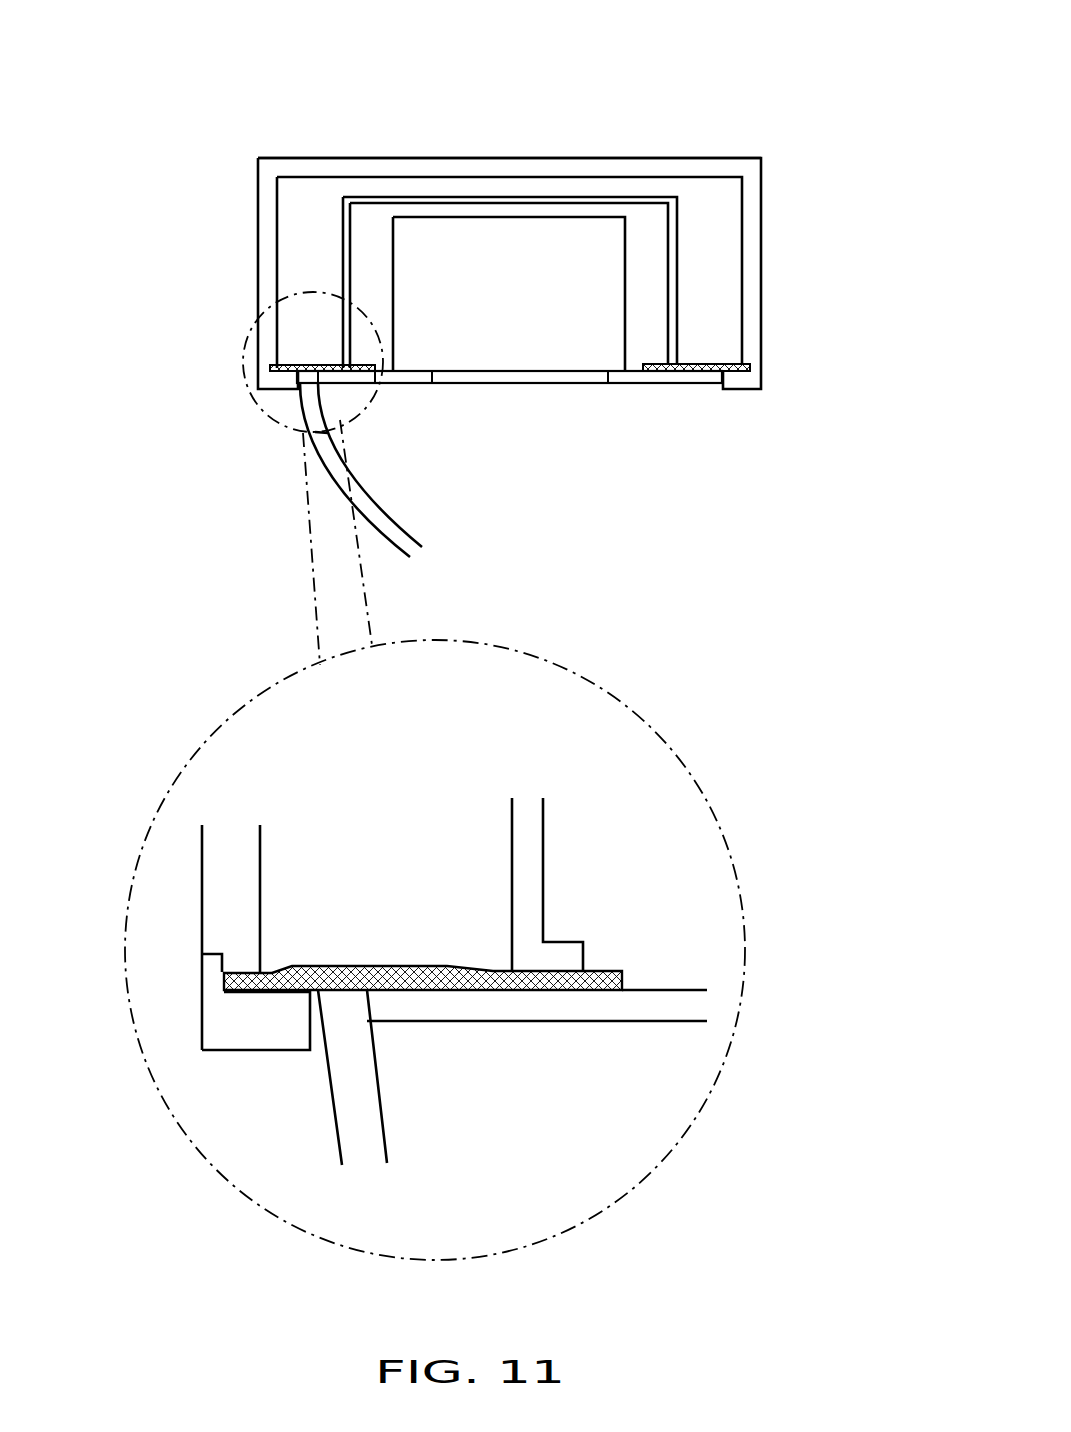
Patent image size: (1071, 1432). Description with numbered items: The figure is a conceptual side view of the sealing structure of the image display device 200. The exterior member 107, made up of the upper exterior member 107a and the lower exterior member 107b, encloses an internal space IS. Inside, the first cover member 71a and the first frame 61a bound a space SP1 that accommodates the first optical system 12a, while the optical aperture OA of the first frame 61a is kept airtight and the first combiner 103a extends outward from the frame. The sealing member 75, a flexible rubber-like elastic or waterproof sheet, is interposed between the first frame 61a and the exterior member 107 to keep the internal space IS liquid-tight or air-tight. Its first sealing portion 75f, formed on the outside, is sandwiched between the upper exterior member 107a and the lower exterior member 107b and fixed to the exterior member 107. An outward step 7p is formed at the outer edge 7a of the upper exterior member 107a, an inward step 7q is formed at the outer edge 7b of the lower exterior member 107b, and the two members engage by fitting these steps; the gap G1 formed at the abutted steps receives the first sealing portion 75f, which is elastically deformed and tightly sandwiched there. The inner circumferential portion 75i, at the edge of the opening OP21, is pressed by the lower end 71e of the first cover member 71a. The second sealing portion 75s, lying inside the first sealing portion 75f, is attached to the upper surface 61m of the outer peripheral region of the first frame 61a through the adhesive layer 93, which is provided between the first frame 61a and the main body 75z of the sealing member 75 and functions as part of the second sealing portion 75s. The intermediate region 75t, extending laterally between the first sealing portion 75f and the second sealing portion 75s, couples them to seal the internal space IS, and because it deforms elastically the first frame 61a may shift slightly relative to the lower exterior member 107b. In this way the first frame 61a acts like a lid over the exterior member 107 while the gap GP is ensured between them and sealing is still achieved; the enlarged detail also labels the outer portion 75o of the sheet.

The image display device 200 is at (748, 130).
The exterior member 107 is at (523, 170).
The internal space IS is at (360, 188).
The first cover member 71a is at (583, 200).
The first optical system 12a is at (450, 230).
The space SP1 is at (363, 263).
The first frame 61a is at (417, 380).
The sealing member 75 is at (363, 377).
The first sealing portion 75f is at (273, 367).
The inner circumferential portion 75i is at (655, 365).
The outer end portion of plate 75o is at (218, 991).
The opening OP21 is at (635, 372).
The optical aperture OA is at (600, 373).
The first combiner 103a is at (412, 547).
The outer edge of the upper exterior member 7a is at (222, 873).
The upper exterior member 107a is at (233, 833).
The outer edge of the lower exterior member 7b is at (220, 1023).
The lower exterior member 107b is at (251, 1023).
The inward step 7q is at (221, 972).
The outward step 7p is at (238, 952).
The intermediate region 75t is at (307, 972).
The second sealing portion 75s is at (383, 978).
The upper surface 61m is at (445, 967).
The main body 75z is at (403, 972).
The gap G1 is at (252, 992).
The gap GP is at (316, 1022).
The adhesive layer 93 is at (382, 994).
The lower end 71e is at (537, 962).